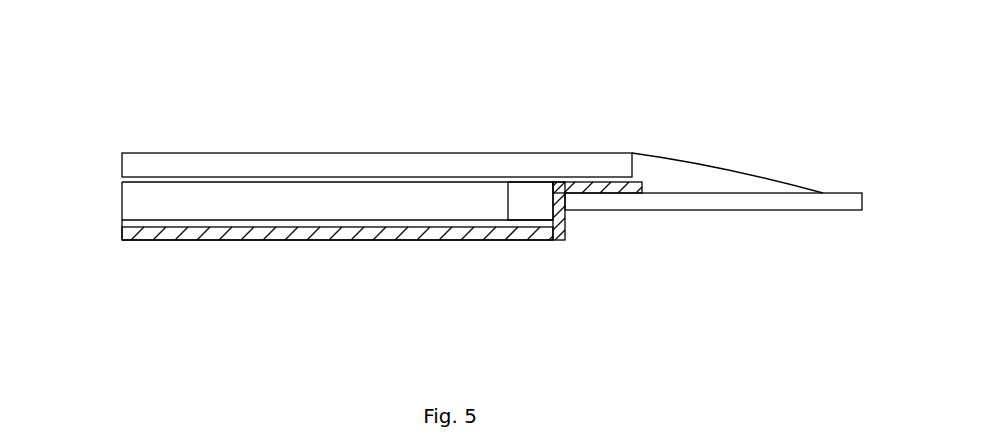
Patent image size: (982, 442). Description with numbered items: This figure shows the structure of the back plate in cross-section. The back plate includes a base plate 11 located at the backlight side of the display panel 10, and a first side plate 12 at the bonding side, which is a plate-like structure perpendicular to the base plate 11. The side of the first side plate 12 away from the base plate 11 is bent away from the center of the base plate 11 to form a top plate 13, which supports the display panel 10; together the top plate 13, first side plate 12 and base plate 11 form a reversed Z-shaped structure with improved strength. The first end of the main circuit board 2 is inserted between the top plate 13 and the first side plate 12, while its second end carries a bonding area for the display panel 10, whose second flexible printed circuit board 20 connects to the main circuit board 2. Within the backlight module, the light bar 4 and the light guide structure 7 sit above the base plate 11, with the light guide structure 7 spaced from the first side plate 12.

The main circuit board 2 is at (737, 220).
The light bar 4 is at (300, 241).
The light guide structure 7 is at (114, 186).
The display panel 10 is at (433, 142).
The base plate 11 is at (458, 252).
The first side plate 12 is at (572, 222).
The top plate 13 is at (597, 169).
The second flexible printed circuit board 20 is at (698, 153).